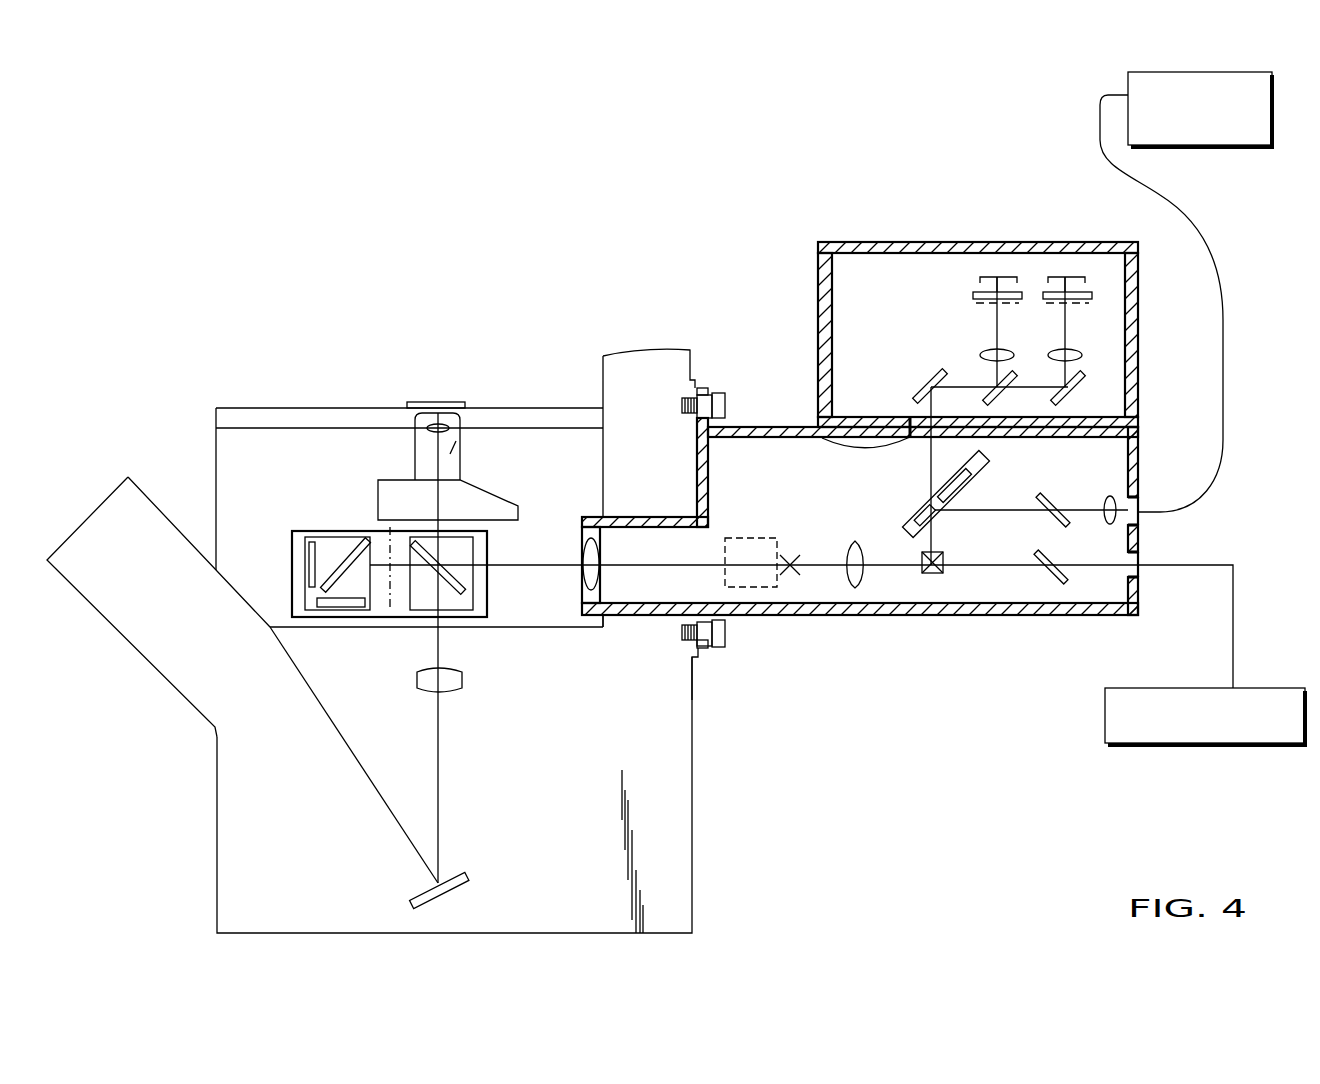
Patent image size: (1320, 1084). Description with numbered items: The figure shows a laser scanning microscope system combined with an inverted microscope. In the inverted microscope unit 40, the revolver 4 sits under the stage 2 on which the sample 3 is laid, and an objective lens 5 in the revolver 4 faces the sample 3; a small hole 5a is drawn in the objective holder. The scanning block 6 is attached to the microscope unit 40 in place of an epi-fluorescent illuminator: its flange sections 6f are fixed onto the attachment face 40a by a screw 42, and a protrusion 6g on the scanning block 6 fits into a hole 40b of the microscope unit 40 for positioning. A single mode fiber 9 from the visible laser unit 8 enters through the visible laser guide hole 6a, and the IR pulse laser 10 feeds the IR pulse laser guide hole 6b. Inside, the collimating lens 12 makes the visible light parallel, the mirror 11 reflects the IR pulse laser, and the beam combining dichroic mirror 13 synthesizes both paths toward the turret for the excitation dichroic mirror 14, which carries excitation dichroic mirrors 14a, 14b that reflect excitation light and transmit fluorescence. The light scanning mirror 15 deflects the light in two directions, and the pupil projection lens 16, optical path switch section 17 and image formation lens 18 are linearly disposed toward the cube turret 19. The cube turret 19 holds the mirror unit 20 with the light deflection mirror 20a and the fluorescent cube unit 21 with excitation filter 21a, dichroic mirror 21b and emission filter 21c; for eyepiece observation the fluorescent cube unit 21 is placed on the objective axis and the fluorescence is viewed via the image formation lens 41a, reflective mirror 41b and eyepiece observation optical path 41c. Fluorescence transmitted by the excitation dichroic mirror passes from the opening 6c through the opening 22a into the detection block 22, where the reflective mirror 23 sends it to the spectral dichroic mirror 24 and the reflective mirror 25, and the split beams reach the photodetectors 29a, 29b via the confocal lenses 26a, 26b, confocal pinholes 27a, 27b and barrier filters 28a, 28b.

The stage 2 is at (362, 422).
The sample 3 is at (458, 402).
The revolver 4 is at (390, 495).
The objective lens 5 is at (427, 455).
The hole 5a is at (455, 430).
The scanning block 6 is at (1120, 614).
The visible laser guide hole 6a is at (1140, 498).
The IR pulse laser guide hole 6b is at (1138, 570).
The opening 6c is at (803, 428).
The flange section 6f is at (702, 388).
The protrusion 6g is at (622, 518).
The visible laser unit 8 is at (1275, 78).
The single mode fiber 9 is at (1222, 242).
The IR pulse laser 10 is at (1105, 703).
The mirror 11 is at (1057, 585).
The collimating lens 12 is at (1112, 497).
The beam combining dichroic mirror 13 is at (1048, 500).
The turret for excitation dichroic mirror 14 is at (912, 522).
The excitation dichroic mirror 14a is at (925, 513).
The excitation dichroic mirror 14b is at (980, 477).
The light scanning mirror 15 is at (931, 574).
The pupil projection lens 16 is at (855, 588).
The optical path switch section 17 is at (777, 587).
The image formation lens 18 is at (595, 600).
The cube turret 19 is at (287, 600).
The mirror unit 20 is at (482, 610).
The light deflection mirror 20a is at (460, 585).
The fluorescent cube unit 21 is at (298, 562).
The excitation filter 21a is at (308, 540).
The dichroic mirror 21b is at (337, 560).
The emission filter 21c is at (325, 600).
The detection block 22 is at (832, 243).
The opening 22a is at (822, 382).
The reflective mirror 23 is at (915, 395).
The spectral dichroic mirror 24 is at (988, 398).
The reflective mirror 25 is at (1085, 392).
The confocal lens 26a is at (982, 352).
The confocal lens 26b is at (1085, 352).
The confocal pinhole 27a is at (985, 306).
The confocal pinhole 27b is at (1080, 306).
The barrier filter 28a is at (985, 277).
The barrier filter 28b is at (1092, 277).
The photodetector 29a is at (1002, 272).
The photodetector 29b is at (1067, 275).
The inverted microscope unit 40 is at (228, 807).
The attachment face 40a is at (697, 657).
The hole 40b is at (643, 615).
The image formation lens 41a is at (413, 673).
The reflective mirror 41b is at (462, 890).
The eyepiece observation optical path 41c is at (110, 538).
The screw 42 is at (716, 395).